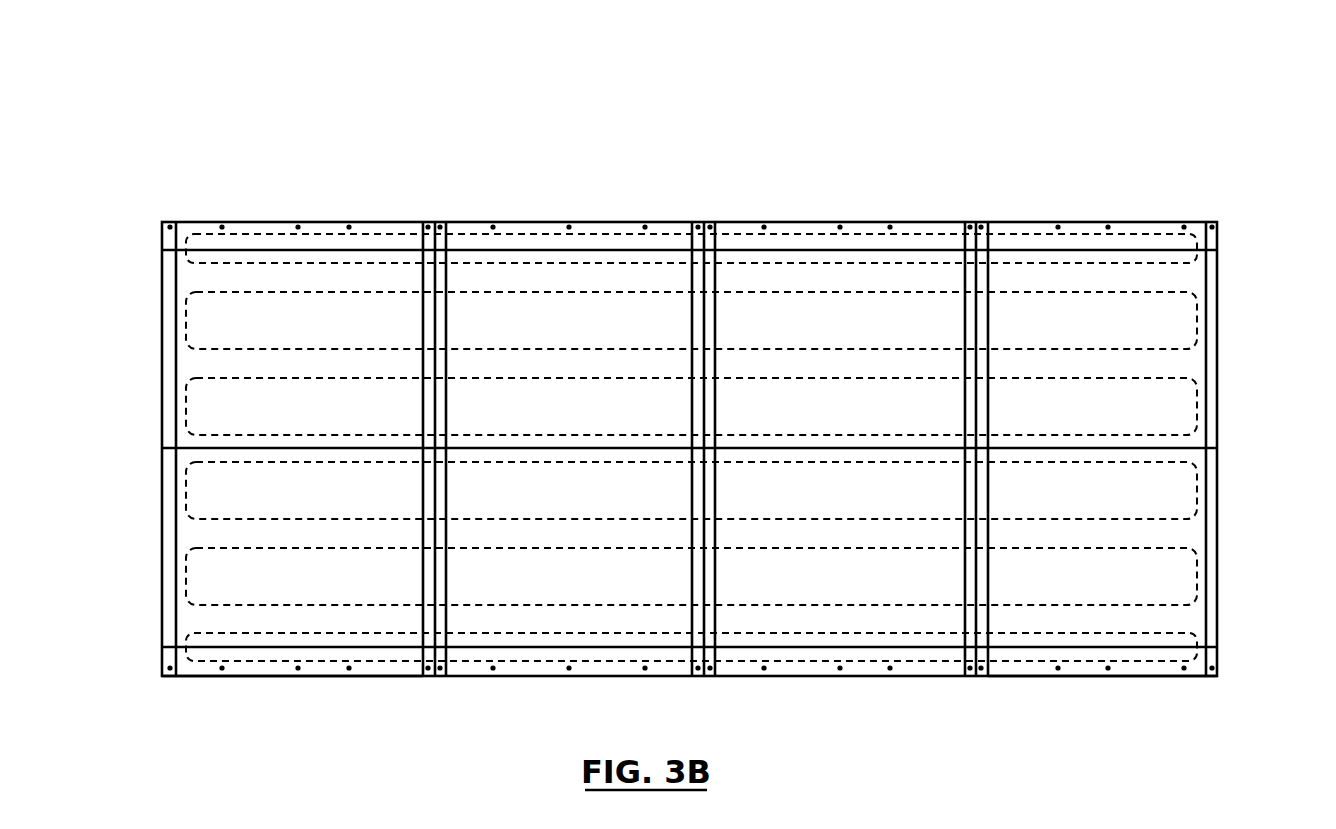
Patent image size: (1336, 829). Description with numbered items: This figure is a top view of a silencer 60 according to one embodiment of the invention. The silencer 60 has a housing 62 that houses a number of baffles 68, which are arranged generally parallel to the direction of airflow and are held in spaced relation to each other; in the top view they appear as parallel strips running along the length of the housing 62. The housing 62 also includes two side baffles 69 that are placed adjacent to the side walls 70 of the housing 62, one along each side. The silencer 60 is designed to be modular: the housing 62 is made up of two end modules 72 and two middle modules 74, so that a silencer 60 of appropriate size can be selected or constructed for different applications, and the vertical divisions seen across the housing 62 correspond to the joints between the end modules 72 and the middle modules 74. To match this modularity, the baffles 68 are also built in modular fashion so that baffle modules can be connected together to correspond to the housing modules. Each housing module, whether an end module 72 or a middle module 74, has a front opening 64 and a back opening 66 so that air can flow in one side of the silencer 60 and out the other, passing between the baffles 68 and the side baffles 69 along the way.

The silencer 60 is at (931, 108).
The housing 62 is at (638, 203).
The front opening 64 is at (135, 338).
The back opening 66 is at (1246, 388).
The baffles 68 is at (818, 341).
The side baffles 69 is at (1195, 258).
The side walls 70 is at (923, 232).
The end modules 72 is at (278, 677).
The middle modules 74 is at (560, 677).